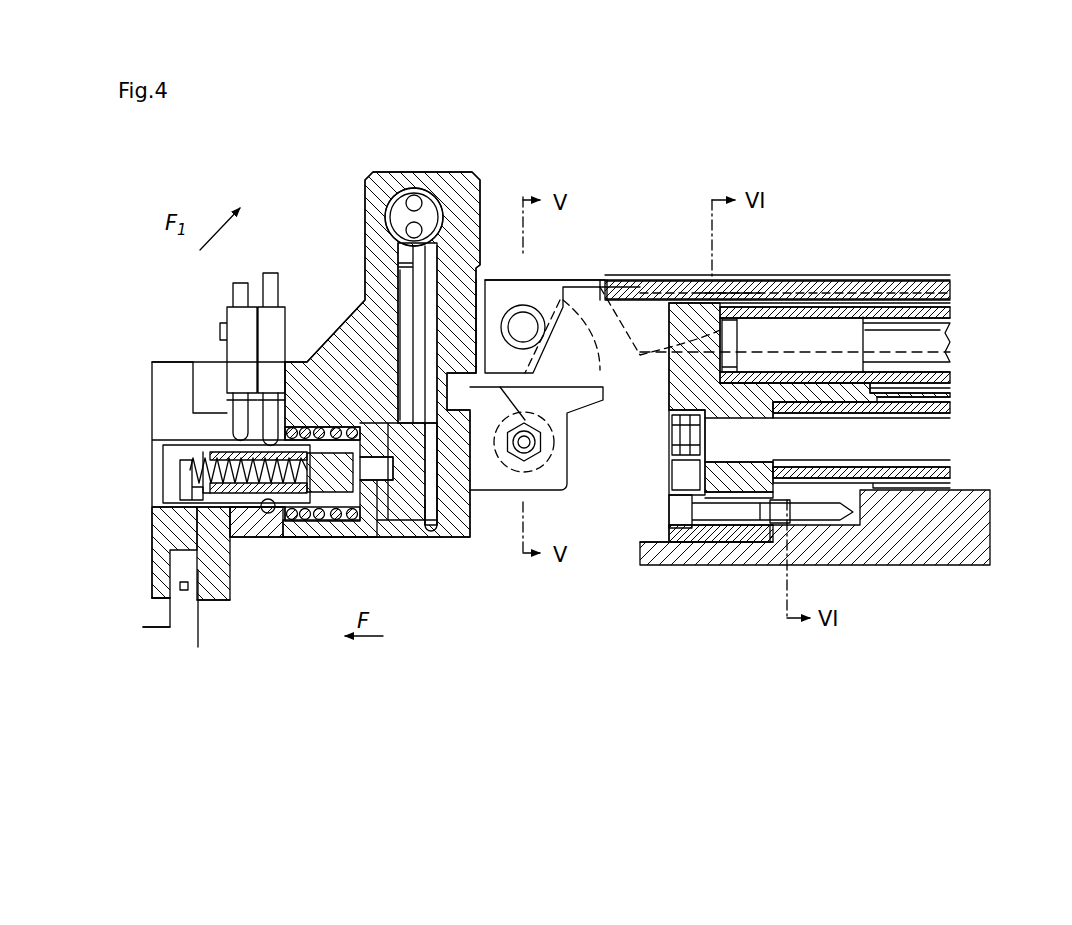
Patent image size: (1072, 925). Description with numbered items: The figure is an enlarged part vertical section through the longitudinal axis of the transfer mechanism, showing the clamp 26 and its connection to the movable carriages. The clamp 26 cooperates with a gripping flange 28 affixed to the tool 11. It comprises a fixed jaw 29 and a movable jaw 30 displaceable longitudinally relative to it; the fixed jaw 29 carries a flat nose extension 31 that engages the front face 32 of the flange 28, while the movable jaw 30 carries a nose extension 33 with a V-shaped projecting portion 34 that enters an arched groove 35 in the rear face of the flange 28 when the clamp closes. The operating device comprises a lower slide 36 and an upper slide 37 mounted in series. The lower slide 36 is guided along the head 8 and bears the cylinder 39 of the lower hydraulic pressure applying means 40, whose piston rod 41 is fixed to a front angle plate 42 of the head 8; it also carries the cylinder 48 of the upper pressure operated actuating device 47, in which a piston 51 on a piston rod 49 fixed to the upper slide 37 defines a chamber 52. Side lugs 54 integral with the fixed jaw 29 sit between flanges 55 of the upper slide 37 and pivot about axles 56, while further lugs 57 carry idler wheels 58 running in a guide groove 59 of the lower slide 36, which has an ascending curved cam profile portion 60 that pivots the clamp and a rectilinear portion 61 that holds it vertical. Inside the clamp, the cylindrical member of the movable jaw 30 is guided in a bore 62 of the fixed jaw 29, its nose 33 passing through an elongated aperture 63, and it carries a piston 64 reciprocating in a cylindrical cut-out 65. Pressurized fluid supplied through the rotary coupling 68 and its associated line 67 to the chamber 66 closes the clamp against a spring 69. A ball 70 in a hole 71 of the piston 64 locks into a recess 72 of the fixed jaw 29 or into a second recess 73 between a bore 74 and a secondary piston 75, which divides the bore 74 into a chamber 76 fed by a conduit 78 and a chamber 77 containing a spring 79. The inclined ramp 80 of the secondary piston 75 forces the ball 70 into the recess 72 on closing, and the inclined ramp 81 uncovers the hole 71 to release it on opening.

The head 8 is at (905, 558).
The tool 11 is at (170, 658).
The clamp 26 is at (141, 358).
The gripping flange 28 is at (215, 645).
The fixed jaw 29 is at (158, 390).
The movable jaw 30 is at (343, 517).
The nose extension 31 is at (160, 573).
The front face 32 is at (167, 618).
The nose extension 33 is at (210, 567).
The V-shaped projecting portion 34 is at (190, 590).
The arched groove 35 is at (193, 598).
The lower slide 36 is at (860, 487).
The upper slide 37 is at (860, 285).
The cylinder 39 is at (935, 475).
The hydraulic pressure applying means 40 is at (957, 450).
The piston rod 41 is at (930, 442).
The front angle plate 42 is at (708, 540).
The pressure operated actuating device 47 is at (953, 342).
The cylinder 48 is at (940, 312).
The piston rod 49 is at (930, 358).
The piston 51 is at (785, 330).
The chamber 52 is at (730, 320).
The side lugs 54 is at (558, 310).
The flanges 55 is at (605, 297).
The axles 56 is at (523, 327).
The lugs 57 is at (553, 475).
The idler wheel 58 is at (552, 403).
The guide groove 59 is at (558, 447).
The curved cam profile portion 60 is at (600, 300).
The rectilinear portion 61 is at (812, 300).
The bore 62 is at (152, 447).
The elongated aperture 63 is at (235, 533).
The piston 64 is at (403, 500).
The cylindrical cut-out 65 is at (435, 507).
The chamber 66 is at (430, 478).
The pipe 67 is at (433, 263).
The rotary coupling 68 is at (428, 210).
The spring 69 is at (322, 428).
The ball 70 is at (260, 508).
The hole 71 is at (255, 512).
The recess 72 is at (262, 513).
The second recess 73 is at (297, 500).
The bore 74 is at (192, 493).
The secondary piston 75 is at (193, 500).
The chamber 76 is at (368, 475).
The chamber 77 is at (203, 457).
The conduit 78 is at (405, 292).
The spring 79 is at (195, 465).
The inclined ramp 80 is at (283, 495).
The inclined ramp 81 is at (270, 515).